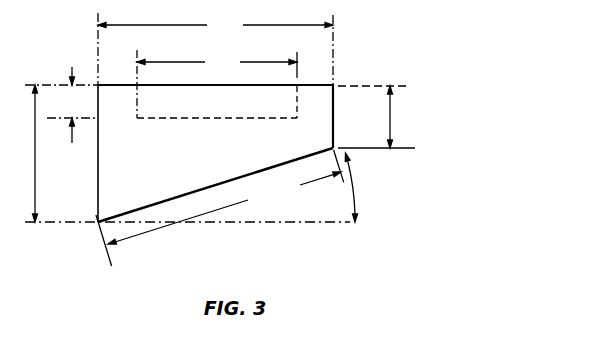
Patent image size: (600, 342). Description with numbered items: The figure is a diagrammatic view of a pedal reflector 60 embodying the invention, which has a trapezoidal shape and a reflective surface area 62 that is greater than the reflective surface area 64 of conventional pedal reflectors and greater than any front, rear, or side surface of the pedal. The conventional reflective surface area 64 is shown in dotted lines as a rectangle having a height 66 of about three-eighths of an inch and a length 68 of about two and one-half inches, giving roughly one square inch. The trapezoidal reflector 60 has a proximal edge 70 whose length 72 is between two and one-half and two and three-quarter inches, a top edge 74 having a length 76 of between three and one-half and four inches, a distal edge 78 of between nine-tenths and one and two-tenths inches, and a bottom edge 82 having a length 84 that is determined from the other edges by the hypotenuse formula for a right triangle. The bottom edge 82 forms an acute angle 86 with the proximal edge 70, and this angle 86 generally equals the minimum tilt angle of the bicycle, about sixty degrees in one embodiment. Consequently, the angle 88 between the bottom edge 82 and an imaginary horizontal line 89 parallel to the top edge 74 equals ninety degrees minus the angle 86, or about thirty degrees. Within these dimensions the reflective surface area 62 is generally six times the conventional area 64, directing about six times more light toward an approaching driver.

The reflector 60 is at (340, 78).
The reflective surface area 62 is at (290, 132).
The reflective surface area of conventional pedal reflector 64 is at (150, 100).
The height 66 is at (71, 105).
The length 68 is at (217, 63).
The proximal edge 70 is at (98, 172).
The length of proximal edge 72 is at (35, 165).
The top edge 74 is at (108, 85).
The length of top edge 76 is at (215, 25).
The distal edge 78 is at (335, 110).
The bottom edge 82 is at (392, 120).
The length of bottom edge 84 is at (220, 208).
The acute angle 86 is at (106, 132).
The angle 88 is at (355, 180).
The imaginary horizontal line 89 is at (313, 223).